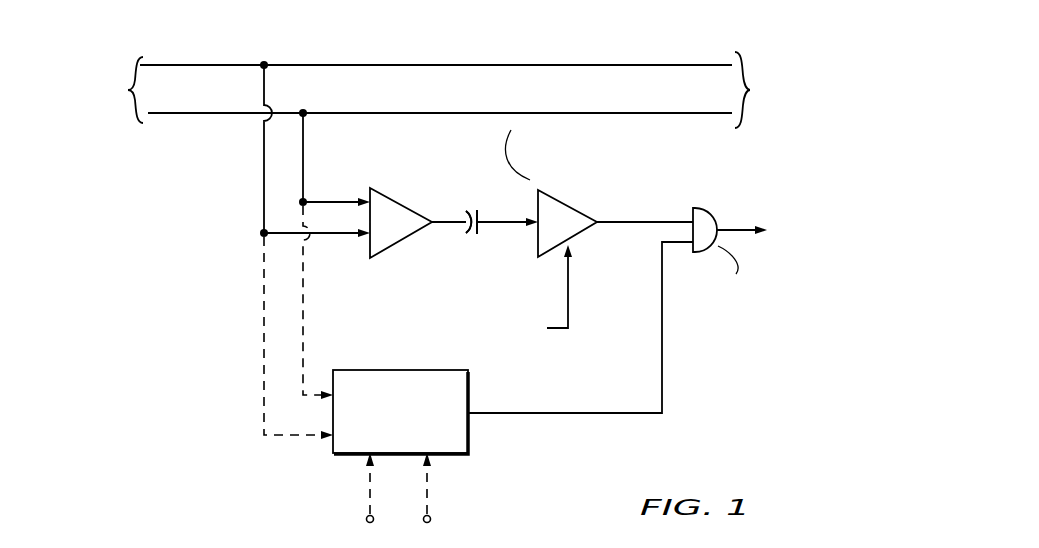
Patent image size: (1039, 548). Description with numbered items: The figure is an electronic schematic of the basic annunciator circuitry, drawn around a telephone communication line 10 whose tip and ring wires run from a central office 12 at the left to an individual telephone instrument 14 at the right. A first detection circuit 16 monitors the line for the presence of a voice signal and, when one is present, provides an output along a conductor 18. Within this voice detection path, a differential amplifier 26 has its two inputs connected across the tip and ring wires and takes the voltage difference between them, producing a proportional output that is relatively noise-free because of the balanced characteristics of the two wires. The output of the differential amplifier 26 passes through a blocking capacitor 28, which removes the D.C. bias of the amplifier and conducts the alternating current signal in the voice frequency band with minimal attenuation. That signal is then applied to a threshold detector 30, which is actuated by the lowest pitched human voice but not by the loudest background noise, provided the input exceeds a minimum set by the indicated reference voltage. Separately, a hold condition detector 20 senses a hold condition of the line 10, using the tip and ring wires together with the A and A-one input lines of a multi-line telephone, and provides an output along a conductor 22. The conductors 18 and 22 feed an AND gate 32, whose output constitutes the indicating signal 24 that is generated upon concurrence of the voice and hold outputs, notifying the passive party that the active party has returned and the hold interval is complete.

The telephone communication line 10 is at (470, 52).
The central office 12 is at (56, 44).
The telephone instrument 14 is at (782, 47).
The first detection circuit 16 is at (484, 201).
The conductor 18 is at (637, 221).
The hold condition detector 20 is at (460, 464).
The conductor 22 is at (640, 414).
The indicating signal output 24 is at (740, 227).
The differential amplifier 26 is at (380, 212).
The blocking capacitor 28 is at (480, 236).
The threshold detector 30 is at (572, 205).
The AND gate 32 is at (699, 208).